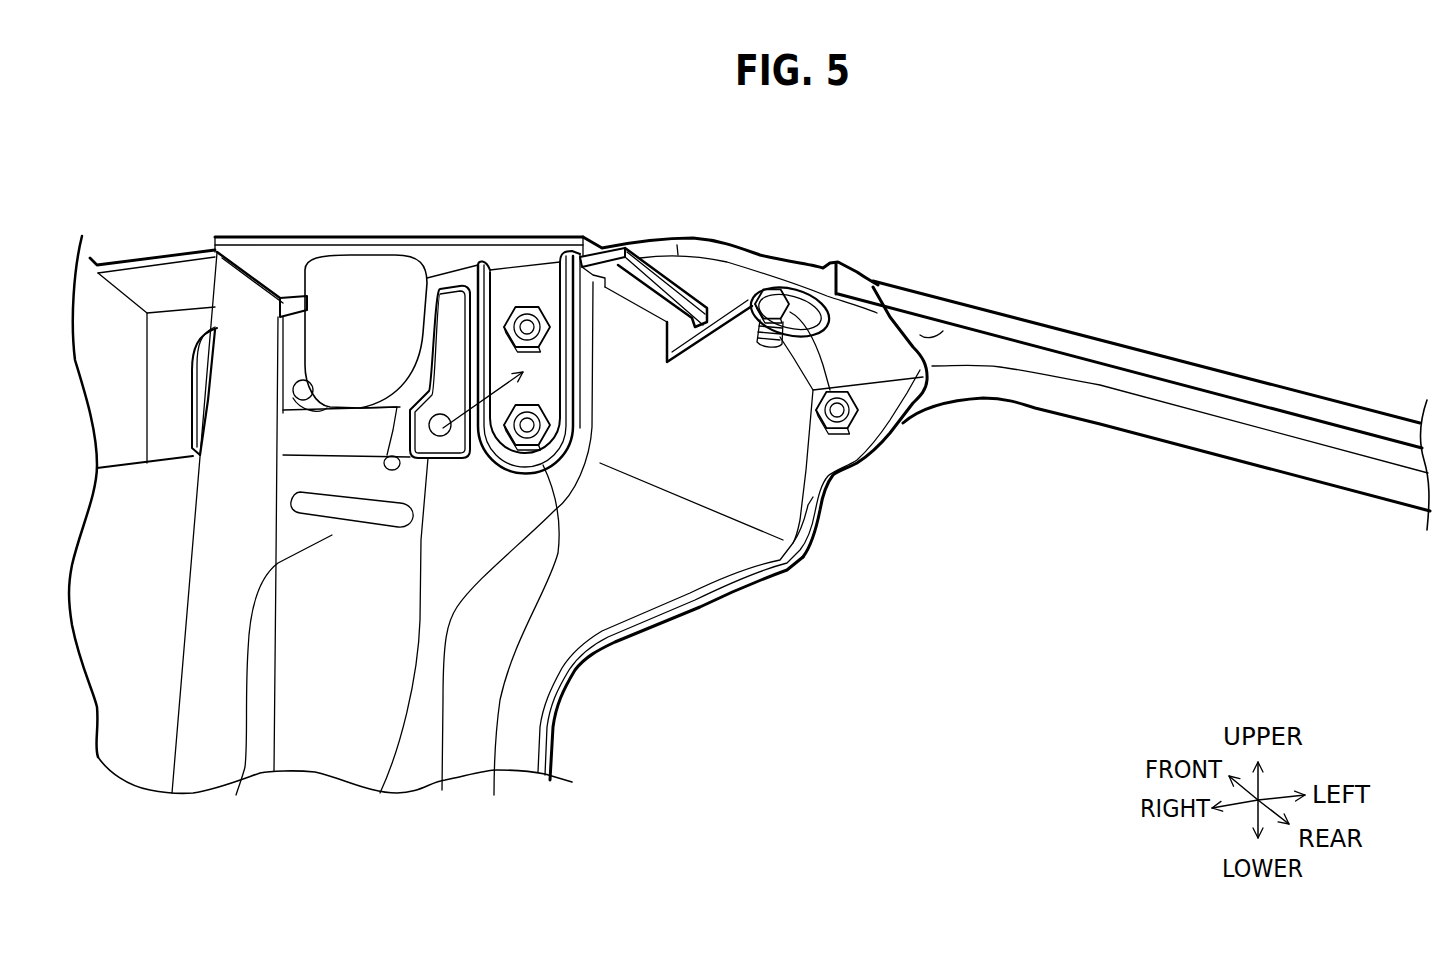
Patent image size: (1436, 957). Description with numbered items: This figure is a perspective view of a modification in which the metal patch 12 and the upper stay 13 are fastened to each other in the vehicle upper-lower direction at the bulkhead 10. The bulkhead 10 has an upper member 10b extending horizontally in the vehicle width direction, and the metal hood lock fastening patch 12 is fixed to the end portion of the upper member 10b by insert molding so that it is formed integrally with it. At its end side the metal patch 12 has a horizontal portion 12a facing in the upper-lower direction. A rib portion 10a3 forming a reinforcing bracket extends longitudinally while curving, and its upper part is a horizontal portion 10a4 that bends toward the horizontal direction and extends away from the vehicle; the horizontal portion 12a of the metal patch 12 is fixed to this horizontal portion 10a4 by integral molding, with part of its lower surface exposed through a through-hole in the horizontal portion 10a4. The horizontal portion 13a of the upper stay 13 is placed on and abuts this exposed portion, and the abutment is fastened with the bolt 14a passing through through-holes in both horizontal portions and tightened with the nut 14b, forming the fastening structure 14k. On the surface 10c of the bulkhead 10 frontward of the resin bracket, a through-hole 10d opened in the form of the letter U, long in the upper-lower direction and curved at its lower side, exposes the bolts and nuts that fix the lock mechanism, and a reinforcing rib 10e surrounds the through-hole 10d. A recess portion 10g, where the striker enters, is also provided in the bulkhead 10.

The bulkhead 10 is at (408, 214).
The upper member 10b is at (160, 503).
The surface 10c is at (236, 795).
The through-hole 10d is at (397, 760).
The rib 10e is at (494, 795).
The recess portion 10g is at (343, 305).
The rib portion 10a3 is at (657, 527).
The horizontal portion 10a4 is at (880, 342).
The metal hood lock fastening patch 12 is at (533, 273).
The horizontal portion 12a is at (855, 352).
The upper stay 13 is at (1078, 340).
The horizontal portion 13a is at (933, 327).
The bolt 14a is at (768, 345).
The nut 14b is at (834, 429).
The fastening structure 14k is at (937, 603).